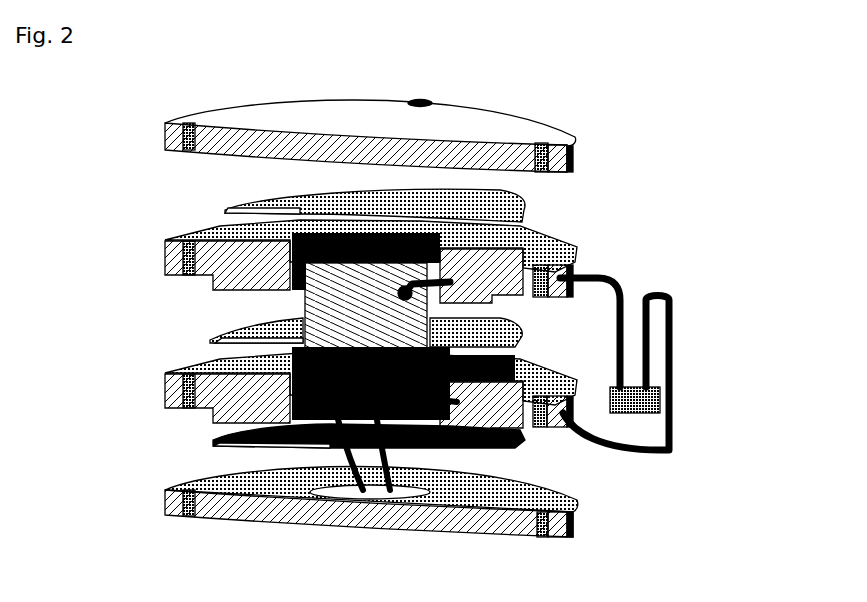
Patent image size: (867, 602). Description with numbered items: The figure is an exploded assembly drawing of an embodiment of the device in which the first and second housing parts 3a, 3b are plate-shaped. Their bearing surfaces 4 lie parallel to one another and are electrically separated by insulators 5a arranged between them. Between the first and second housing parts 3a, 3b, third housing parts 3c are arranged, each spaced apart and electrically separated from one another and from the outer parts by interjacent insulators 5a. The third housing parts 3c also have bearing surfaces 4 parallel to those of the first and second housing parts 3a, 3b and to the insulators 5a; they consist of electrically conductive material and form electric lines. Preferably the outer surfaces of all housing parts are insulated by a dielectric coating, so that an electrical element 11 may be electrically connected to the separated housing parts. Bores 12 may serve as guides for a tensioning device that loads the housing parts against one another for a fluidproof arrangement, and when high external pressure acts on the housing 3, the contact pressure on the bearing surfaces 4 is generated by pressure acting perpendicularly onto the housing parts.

The housing 3 is at (672, 87).
The first housing part 3a is at (580, 511).
The second housing part 3b is at (580, 149).
The third housing part 3c is at (160, 257).
The bearing surface 4 is at (556, 182).
The insulator 5a is at (221, 208).
The electrical element 11 is at (639, 421).
The bore 12 is at (190, 120).